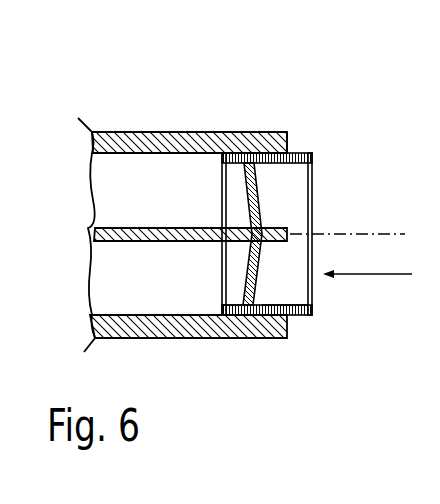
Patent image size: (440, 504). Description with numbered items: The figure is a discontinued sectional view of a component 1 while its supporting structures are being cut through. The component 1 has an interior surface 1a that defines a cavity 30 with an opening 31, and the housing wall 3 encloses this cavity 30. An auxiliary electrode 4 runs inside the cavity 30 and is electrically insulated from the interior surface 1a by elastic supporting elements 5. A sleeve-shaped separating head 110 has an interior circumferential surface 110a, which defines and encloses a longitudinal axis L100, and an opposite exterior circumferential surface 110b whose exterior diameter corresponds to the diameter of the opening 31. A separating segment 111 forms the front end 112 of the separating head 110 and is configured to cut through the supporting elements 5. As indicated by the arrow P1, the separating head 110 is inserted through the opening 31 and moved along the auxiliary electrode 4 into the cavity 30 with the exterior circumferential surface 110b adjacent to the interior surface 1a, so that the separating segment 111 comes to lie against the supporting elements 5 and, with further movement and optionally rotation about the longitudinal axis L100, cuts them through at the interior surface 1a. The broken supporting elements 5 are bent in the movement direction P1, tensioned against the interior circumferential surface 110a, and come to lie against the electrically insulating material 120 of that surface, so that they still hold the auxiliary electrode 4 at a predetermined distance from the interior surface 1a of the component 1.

The component 1 is at (247, 80).
The interior surface 1a is at (174, 165).
The housing 3 is at (113, 132).
The cavity 30 is at (124, 194).
The opening 31 is at (297, 145).
The auxiliary electrode 4 is at (105, 234).
The supporting elements 5 is at (258, 200).
The separating head 110 is at (313, 215).
The interior circumferential surface 110a is at (291, 163).
The exterior circumferential surface 110b is at (301, 318).
The separating segment 111 is at (231, 316).
The front end 112 is at (222, 290).
The electrically insulating material 120 is at (274, 304).
The longitudinal axis L100 is at (395, 230).
The movement direction P1 is at (397, 274).